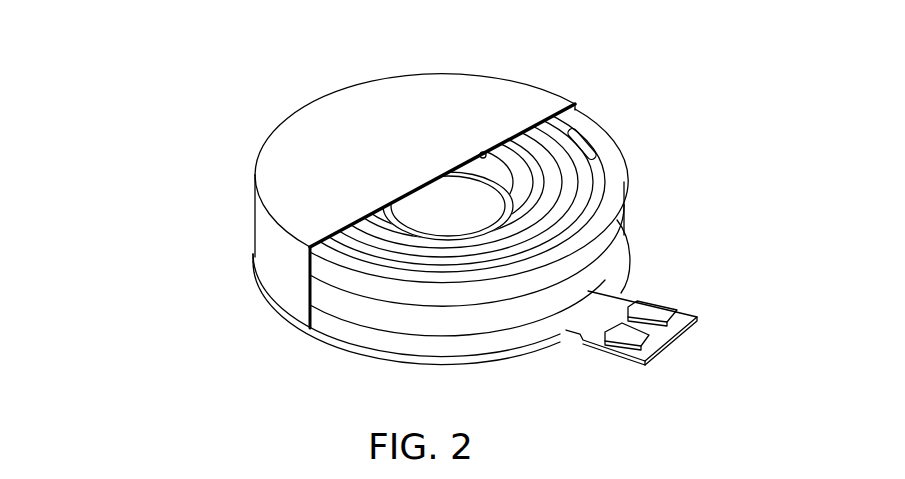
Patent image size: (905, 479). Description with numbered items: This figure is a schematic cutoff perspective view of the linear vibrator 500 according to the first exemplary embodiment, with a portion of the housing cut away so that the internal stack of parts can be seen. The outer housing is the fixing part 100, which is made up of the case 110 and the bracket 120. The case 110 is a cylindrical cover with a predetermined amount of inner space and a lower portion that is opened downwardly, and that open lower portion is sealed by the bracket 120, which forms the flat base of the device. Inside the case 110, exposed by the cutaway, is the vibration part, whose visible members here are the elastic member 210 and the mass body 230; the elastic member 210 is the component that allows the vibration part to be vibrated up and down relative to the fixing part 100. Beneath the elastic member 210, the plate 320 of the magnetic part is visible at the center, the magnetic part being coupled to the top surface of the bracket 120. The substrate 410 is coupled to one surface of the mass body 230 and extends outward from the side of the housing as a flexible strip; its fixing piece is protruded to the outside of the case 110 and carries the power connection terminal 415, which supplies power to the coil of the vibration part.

The linear vibrator 500 is at (325, 39).
The fixing part 100 is at (144, 195).
The case 110 is at (260, 221).
The bracket 120 is at (262, 299).
The elastic member 210 is at (595, 141).
The mass body 230 is at (604, 259).
The plate 320 is at (432, 198).
The substrate 410 is at (566, 340).
The power connection terminal 415 is at (663, 316).